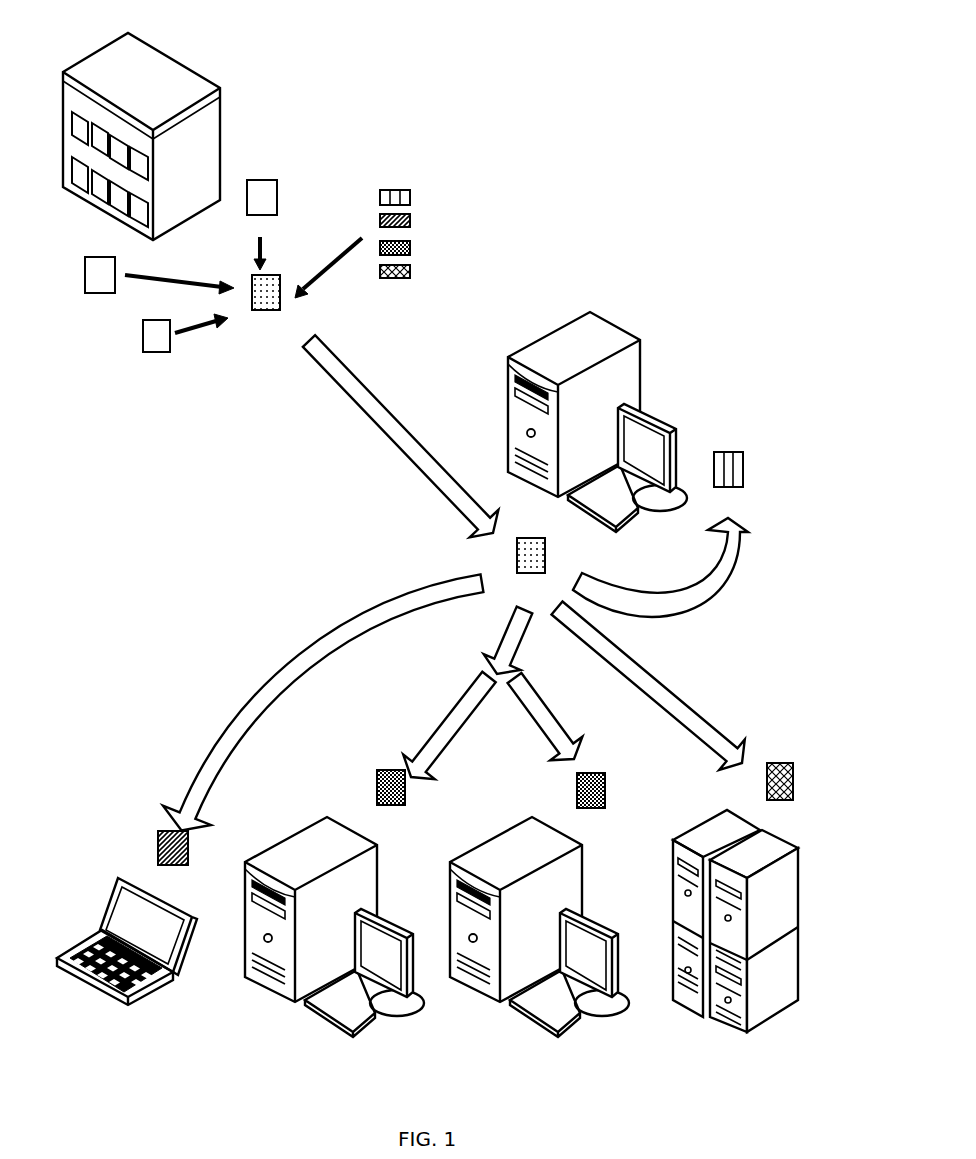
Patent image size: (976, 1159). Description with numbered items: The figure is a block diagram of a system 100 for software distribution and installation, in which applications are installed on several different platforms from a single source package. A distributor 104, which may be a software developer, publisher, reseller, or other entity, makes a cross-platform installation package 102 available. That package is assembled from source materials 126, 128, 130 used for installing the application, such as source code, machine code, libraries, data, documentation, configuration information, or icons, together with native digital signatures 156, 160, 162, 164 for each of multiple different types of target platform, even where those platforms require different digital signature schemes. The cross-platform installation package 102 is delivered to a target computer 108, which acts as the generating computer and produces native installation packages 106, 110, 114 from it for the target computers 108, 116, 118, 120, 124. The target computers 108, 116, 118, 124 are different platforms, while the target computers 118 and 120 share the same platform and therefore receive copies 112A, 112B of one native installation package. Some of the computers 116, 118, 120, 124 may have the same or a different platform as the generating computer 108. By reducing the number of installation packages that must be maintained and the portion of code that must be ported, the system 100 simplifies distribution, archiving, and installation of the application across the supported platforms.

The system 100 is at (598, 153).
The cross-platform installation package 102 is at (281, 283).
The distributor 104 is at (73, 62).
The native installation package 106 is at (744, 455).
The target computer 108 is at (643, 346).
The native installation package 110 is at (160, 832).
The copy of native installation package 112A is at (378, 772).
The copy of native installation package 112B is at (606, 775).
The native installation package 114 is at (794, 769).
The target computer 116 is at (95, 992).
The target computer 118 is at (284, 1003).
The target computer 120 is at (489, 1003).
The target computer 124 is at (706, 1010).
The source material 126 is at (278, 189).
The source material 128 is at (87, 262).
The source material 130 is at (122, 372).
The native digital signature 156 is at (411, 197).
The native digital signature 160 is at (411, 220).
The native digital signature 162 is at (411, 248).
The native digital signature 164 is at (411, 272).